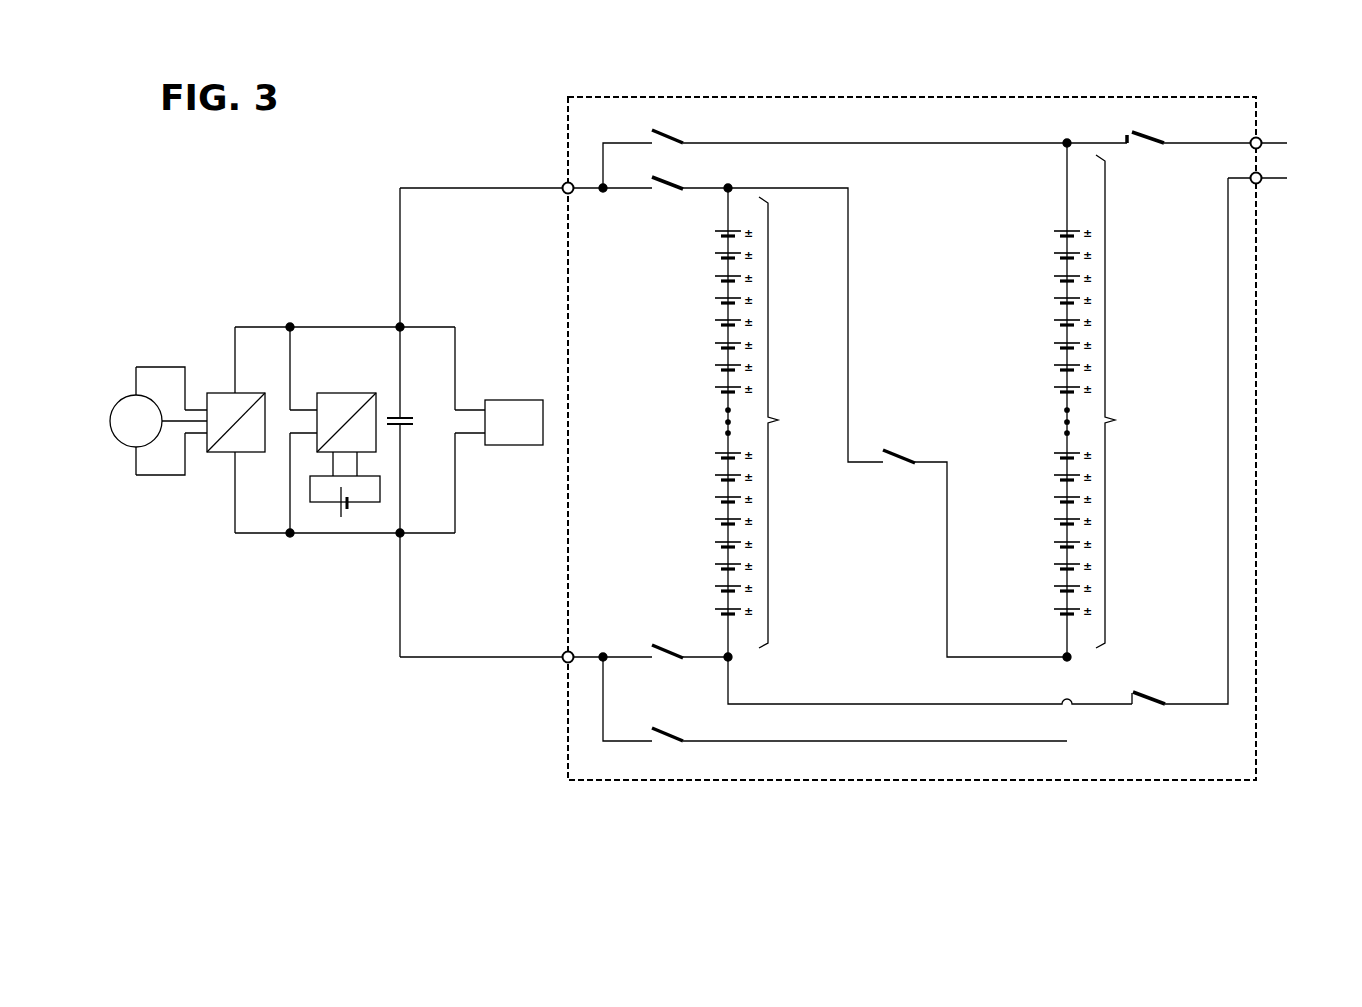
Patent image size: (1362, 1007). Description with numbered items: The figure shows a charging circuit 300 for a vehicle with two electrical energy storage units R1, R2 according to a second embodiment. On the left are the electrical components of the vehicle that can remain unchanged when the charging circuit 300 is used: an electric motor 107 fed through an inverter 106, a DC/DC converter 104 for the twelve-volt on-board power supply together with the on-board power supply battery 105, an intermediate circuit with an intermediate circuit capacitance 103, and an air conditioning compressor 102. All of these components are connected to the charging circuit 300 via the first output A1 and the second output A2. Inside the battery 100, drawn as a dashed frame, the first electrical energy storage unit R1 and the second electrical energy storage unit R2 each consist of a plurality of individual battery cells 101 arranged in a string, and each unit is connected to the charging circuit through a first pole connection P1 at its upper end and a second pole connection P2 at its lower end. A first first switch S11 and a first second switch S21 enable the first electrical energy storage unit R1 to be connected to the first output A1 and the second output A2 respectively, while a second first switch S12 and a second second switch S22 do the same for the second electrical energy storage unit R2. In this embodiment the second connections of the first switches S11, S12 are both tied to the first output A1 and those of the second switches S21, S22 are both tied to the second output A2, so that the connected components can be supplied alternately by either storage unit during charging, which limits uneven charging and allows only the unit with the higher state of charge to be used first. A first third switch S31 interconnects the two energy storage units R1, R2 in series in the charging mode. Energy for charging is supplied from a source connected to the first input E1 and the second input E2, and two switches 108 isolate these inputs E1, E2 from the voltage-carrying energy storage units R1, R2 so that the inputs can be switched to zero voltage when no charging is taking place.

The battery 100 is at (1258, 690).
The battery cells 101 is at (720, 343).
The air conditioning compressor 102 is at (505, 399).
The intermediate circuit capacitance 103 is at (403, 415).
The DC/DC converter 104 is at (350, 392).
The on-board power supply battery 105 is at (341, 517).
The inverter 106 is at (220, 392).
The electric motor 107 is at (130, 394).
The switches 108 is at (1146, 137).
The charging circuit 300 is at (366, 196).
The first first switch S11 is at (672, 193).
The second first switch S12 is at (672, 129).
The first second switch S21 is at (672, 647).
The second second switch S22 is at (672, 729).
The first third switch S31 is at (902, 448).
The first pole connections P1 is at (735, 187).
The second pole connections P2 is at (734, 657).
The first electrical energy storage unit R1 is at (786, 422).
The second electrical energy storage unit R2 is at (1123, 401).
The first output A1 is at (562, 185).
The second output A2 is at (562, 663).
The first input E1 is at (1262, 140).
The second input E2 is at (1262, 182).